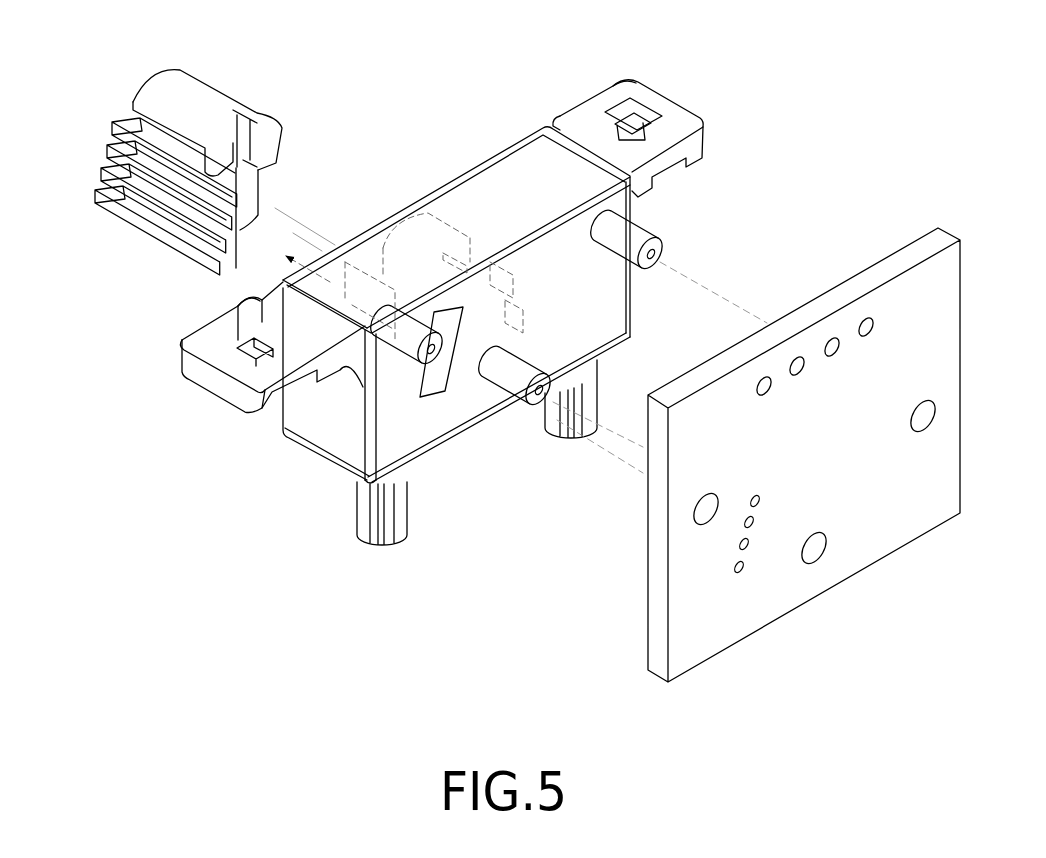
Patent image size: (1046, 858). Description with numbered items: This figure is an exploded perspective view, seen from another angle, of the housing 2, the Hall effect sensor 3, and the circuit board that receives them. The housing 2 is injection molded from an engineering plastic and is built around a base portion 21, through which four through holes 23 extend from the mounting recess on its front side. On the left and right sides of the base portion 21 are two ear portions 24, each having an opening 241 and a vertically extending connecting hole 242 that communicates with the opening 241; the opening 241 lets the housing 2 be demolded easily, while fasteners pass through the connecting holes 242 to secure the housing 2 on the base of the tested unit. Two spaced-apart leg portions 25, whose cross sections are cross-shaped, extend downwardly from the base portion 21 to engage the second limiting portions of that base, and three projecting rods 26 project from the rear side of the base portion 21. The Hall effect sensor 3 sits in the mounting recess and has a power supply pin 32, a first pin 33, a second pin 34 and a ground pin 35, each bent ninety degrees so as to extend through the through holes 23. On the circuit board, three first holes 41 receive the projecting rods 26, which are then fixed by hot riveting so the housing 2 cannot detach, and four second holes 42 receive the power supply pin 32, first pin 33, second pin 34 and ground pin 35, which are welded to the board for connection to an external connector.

The housing 2 is at (430, 334).
The Hall effect sensor 3 is at (162, 154).
The base portion 21 is at (437, 203).
The through holes 23 is at (397, 274).
The ear portions 24 is at (220, 386).
The leg portions 25 is at (399, 522).
The projecting rods 26 is at (648, 247).
The power supply pin 32 is at (117, 210).
The first pin 33 is at (112, 157).
The second pin 34 is at (107, 175).
The ground pin 35 is at (117, 134).
The first holes 41 is at (708, 512).
The second holes 42 is at (756, 505).
The opening 241 is at (214, 329).
The connecting hole 242 is at (258, 345).